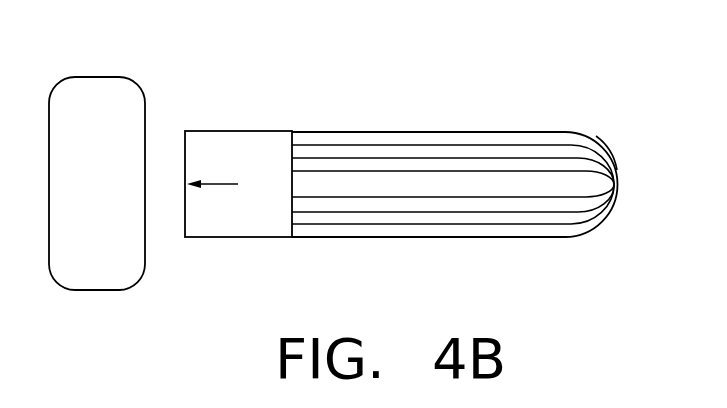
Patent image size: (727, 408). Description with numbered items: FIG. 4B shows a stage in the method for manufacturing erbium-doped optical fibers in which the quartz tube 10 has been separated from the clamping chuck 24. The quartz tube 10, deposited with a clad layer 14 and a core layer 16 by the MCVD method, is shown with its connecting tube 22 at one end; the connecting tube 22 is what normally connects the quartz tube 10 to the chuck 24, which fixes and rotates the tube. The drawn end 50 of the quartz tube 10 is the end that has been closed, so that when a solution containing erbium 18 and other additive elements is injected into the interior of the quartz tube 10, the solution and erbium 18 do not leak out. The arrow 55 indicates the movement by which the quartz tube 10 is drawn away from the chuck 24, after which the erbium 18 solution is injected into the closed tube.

The quartz tube 10 is at (448, 135).
The clad layer 14 is at (397, 148).
The core layer 16 is at (340, 157).
The erbium 18 is at (503, 167).
The connecting tube 22 is at (258, 130).
The chuck 24 is at (100, 72).
The rounded insertion end 50 is at (606, 138).
The direction of movement arrow 55 is at (222, 183).